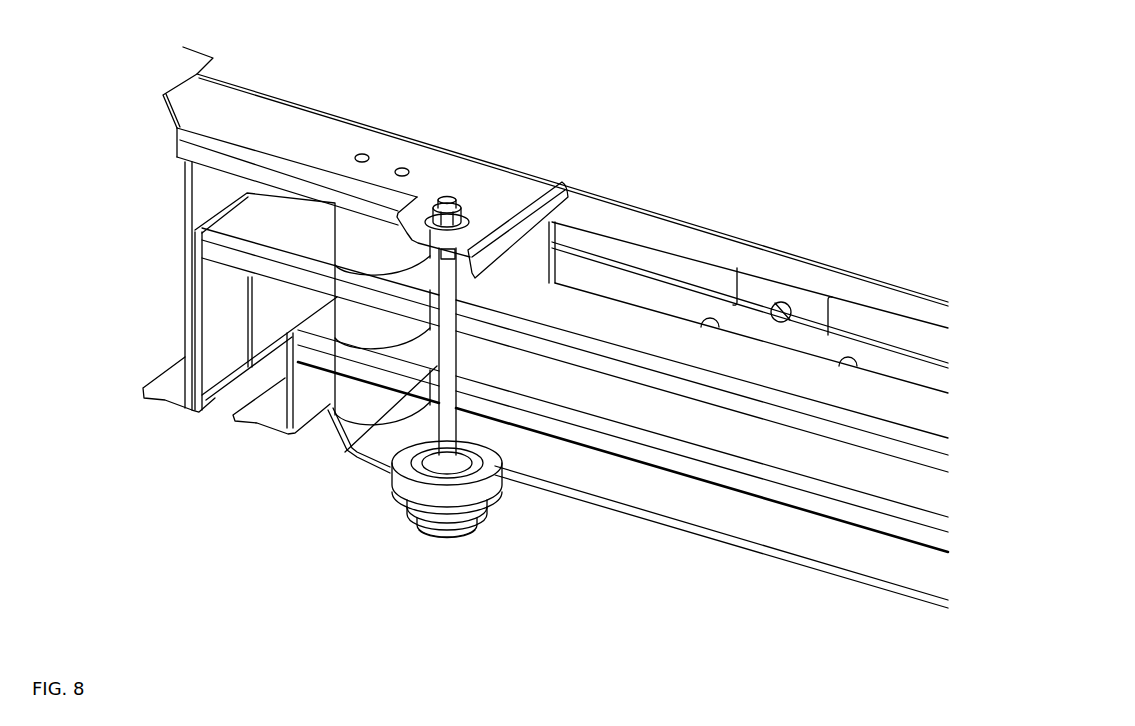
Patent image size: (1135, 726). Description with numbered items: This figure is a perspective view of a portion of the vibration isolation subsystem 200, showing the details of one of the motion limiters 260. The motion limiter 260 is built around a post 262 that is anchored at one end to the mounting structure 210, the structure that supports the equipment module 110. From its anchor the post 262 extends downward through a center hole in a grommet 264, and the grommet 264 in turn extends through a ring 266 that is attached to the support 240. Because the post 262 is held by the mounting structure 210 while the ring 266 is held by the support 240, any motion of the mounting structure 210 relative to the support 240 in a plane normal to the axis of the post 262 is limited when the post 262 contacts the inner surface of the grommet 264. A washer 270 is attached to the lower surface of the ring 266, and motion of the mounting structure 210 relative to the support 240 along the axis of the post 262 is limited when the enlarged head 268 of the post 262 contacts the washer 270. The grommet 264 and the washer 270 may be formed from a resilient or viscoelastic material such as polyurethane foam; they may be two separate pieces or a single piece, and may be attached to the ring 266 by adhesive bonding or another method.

The vibration isolation subsystem 200 is at (102, 38).
The equipment module 110 is at (183, 47).
The mounting structure 210 is at (163, 96).
The support 240 is at (697, 533).
The motion limiter 260 is at (438, 622).
The post 262 is at (343, 455).
The grommet 264 is at (413, 468).
The ring 266 is at (433, 505).
The enlarged head 268 is at (437, 516).
The washer 270 is at (500, 503).